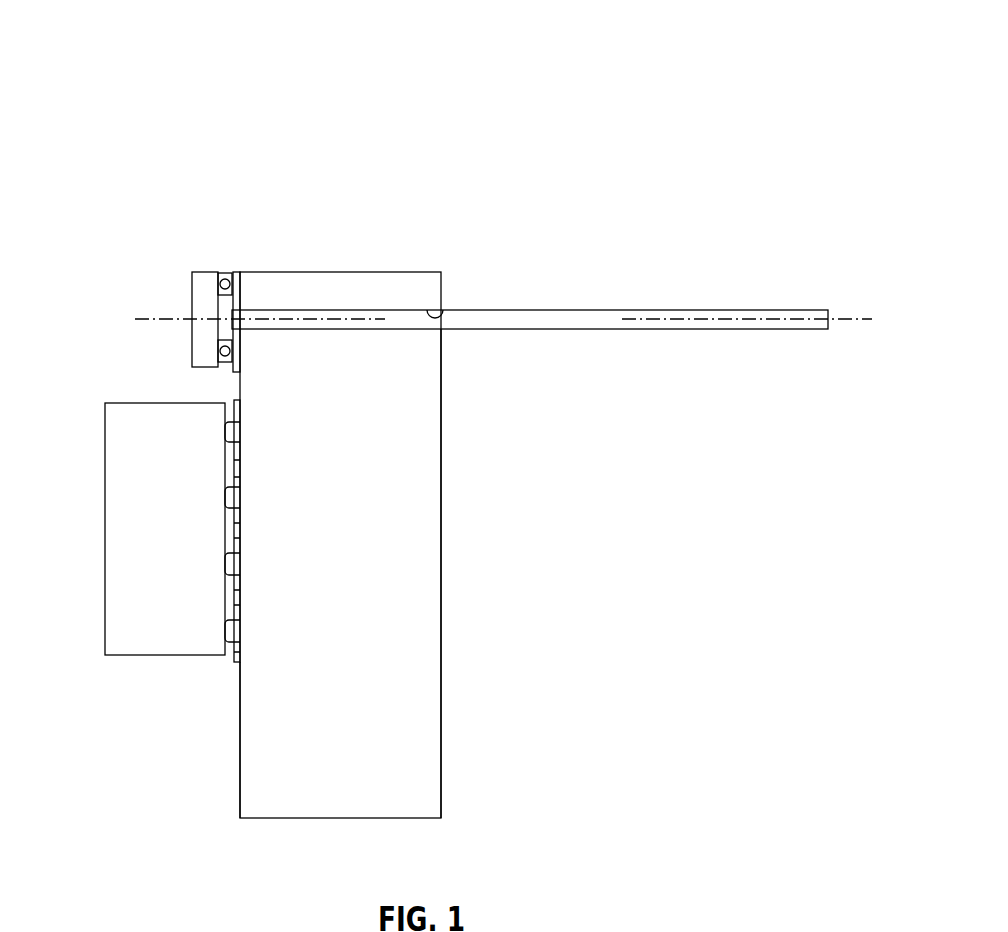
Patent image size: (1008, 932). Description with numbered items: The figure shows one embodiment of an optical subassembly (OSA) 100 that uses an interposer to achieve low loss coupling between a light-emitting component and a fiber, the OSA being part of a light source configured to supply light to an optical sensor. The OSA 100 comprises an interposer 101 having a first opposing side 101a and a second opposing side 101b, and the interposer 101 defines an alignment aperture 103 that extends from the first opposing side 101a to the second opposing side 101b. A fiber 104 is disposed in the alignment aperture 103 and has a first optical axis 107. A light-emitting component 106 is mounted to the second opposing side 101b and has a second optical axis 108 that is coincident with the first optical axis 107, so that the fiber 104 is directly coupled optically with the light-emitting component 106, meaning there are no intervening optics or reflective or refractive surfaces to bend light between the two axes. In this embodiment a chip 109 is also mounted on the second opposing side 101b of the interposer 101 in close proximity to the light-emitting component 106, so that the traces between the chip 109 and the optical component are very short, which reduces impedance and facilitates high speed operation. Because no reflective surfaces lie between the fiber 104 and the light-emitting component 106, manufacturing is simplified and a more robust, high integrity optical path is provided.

The optical subassembly 100 is at (442, 101).
The interposer 101 is at (302, 272).
The first opposing side 101a is at (442, 403).
The second opposing side 101b is at (240, 765).
The alignment aperture 103 is at (442, 313).
The fiber 104 is at (598, 310).
The light-emitting component 106 is at (197, 338).
The first optical axis 107 is at (843, 318).
The second optical axis 108 is at (143, 318).
The chip 109 is at (123, 437).